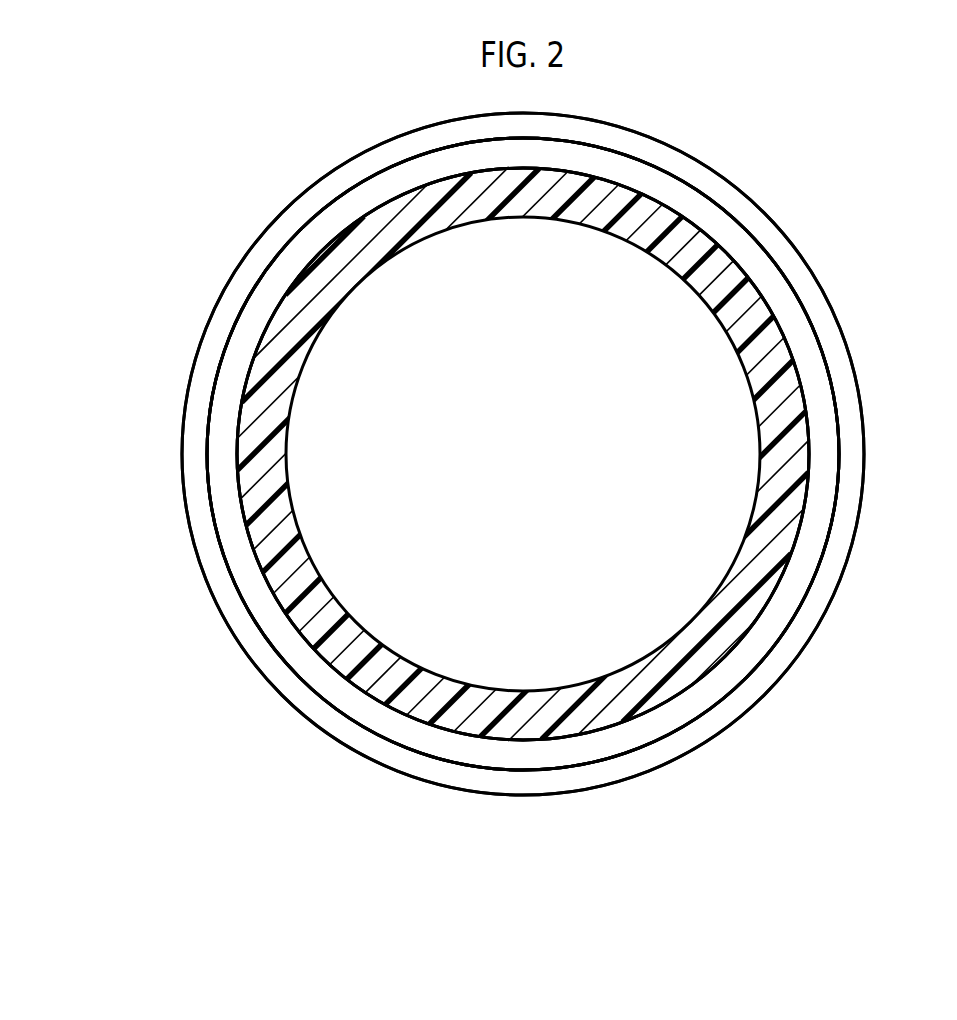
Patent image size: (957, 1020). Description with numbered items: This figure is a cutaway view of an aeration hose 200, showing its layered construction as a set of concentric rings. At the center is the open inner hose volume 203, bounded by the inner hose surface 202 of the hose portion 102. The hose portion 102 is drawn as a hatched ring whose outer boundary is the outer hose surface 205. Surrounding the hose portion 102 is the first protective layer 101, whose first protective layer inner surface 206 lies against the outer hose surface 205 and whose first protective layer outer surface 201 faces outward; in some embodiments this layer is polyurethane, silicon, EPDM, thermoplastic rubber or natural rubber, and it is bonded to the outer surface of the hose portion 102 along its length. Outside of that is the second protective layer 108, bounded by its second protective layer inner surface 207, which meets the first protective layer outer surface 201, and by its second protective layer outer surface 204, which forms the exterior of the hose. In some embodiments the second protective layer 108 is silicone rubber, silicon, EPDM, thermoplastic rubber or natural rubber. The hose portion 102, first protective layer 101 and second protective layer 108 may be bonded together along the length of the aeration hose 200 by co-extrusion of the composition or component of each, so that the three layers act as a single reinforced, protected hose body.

The aeration hose 200 is at (210, 146).
The second protective layer outer surface 204 is at (678, 148).
The second protective layer 108 is at (710, 183).
The second protective layer inner surface 207 is at (725, 208).
The first protective layer 101 is at (767, 282).
The first protective layer inner surface 206 is at (790, 332).
The hose portion 102 is at (778, 373).
The first protective layer outer surface 201 is at (835, 405).
The outer hose surface 205 is at (812, 433).
The inner hose surface 202 is at (792, 492).
The inner hose volume 203 is at (641, 497).